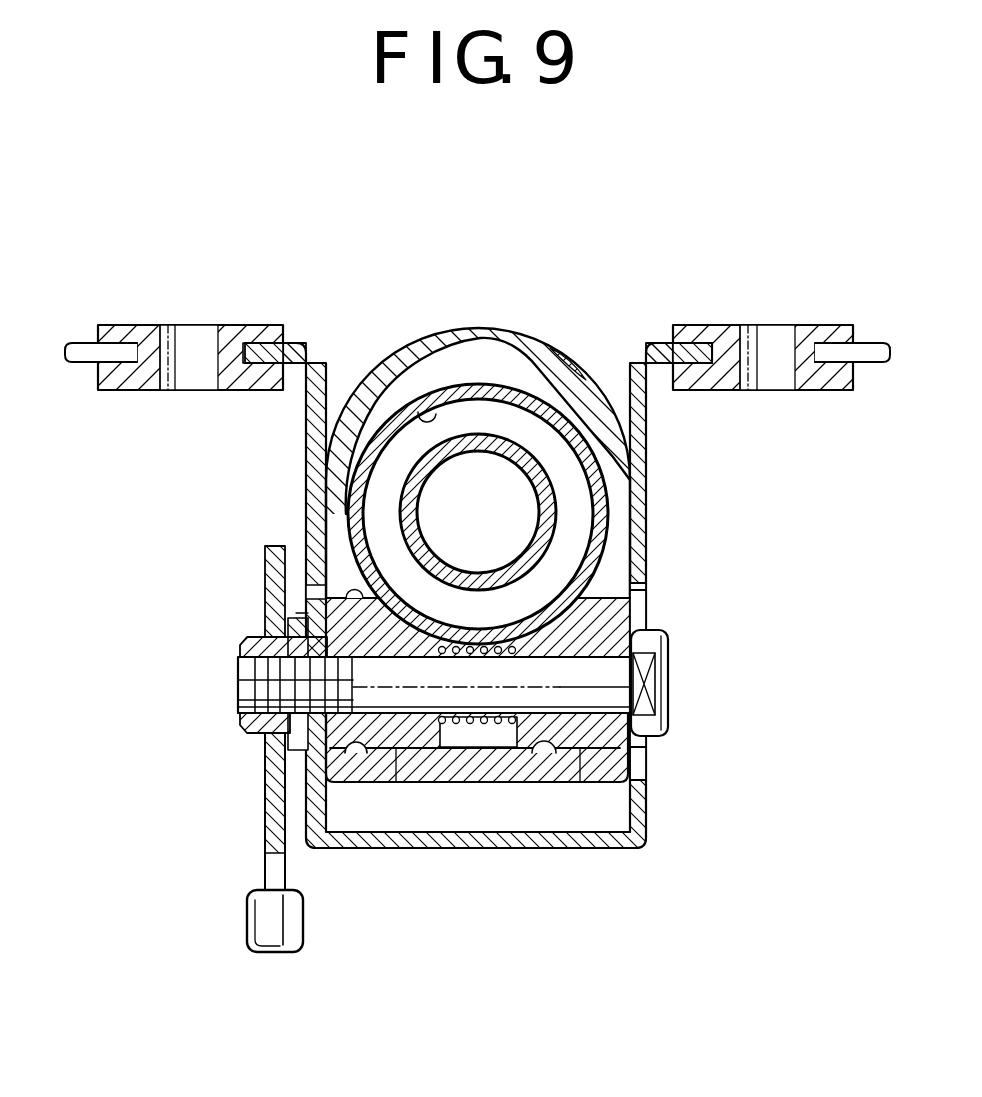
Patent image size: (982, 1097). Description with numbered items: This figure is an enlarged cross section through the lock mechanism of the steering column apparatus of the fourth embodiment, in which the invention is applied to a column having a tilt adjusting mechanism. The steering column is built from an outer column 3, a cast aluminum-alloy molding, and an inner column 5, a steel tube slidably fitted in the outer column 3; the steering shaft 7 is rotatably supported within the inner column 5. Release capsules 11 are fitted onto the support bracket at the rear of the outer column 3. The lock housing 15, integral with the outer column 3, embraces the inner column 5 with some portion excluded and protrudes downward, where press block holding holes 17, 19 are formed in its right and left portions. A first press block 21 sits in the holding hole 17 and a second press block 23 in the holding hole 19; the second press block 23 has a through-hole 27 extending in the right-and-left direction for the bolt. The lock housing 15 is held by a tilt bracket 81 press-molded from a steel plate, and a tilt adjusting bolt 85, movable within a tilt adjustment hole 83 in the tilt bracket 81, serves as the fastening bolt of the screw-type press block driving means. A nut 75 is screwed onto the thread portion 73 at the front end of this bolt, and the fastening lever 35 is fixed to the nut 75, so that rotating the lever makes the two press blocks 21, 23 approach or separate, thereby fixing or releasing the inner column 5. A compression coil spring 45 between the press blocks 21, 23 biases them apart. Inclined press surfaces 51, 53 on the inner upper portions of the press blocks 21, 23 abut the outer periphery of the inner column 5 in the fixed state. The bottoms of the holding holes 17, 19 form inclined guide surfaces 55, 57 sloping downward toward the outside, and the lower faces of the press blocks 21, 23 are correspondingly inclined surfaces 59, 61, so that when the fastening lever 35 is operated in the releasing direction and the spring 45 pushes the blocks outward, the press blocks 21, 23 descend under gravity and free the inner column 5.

The outer column 3 is at (531, 300).
The inner column 5 is at (407, 365).
The steering shaft 7 is at (498, 444).
The release capsules 11 is at (142, 335).
The lock housing 15 is at (622, 530).
The press block holding hole 17 is at (653, 600).
The press block holding hole 19 is at (350, 596).
The first press block 21 is at (645, 742).
The second press block 23 is at (320, 600).
The through-hole 27 is at (438, 745).
The fastening lever 35 is at (265, 818).
The compression coil spring 45 is at (495, 748).
The inclined press surface 51 is at (560, 545).
The inclined press surface 53 is at (418, 408).
The inclined guide surface 55 is at (566, 742).
The inclined guide surface 57 is at (360, 755).
The inclined surface 59 is at (588, 750).
The inclined surface 61 is at (415, 755).
The thread portion 73 is at (240, 681).
The nut 75 is at (242, 733).
The tilt bracket 81 is at (636, 492).
The tilt adjustment hole 83 is at (267, 593).
The tilt adjusting bolt 85 is at (603, 674).